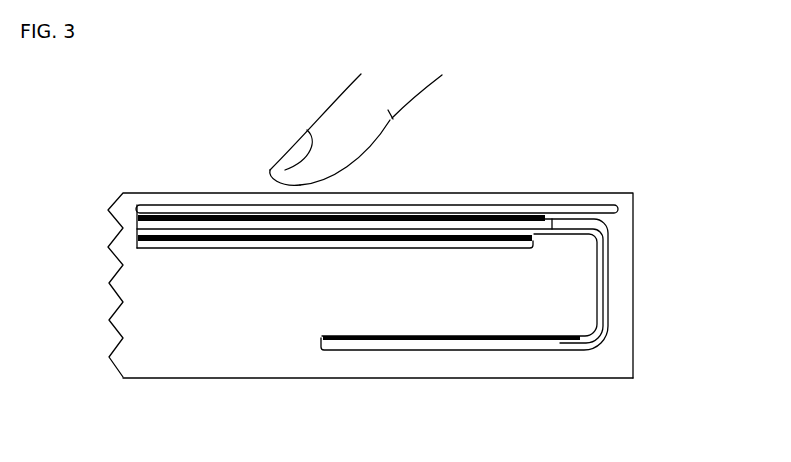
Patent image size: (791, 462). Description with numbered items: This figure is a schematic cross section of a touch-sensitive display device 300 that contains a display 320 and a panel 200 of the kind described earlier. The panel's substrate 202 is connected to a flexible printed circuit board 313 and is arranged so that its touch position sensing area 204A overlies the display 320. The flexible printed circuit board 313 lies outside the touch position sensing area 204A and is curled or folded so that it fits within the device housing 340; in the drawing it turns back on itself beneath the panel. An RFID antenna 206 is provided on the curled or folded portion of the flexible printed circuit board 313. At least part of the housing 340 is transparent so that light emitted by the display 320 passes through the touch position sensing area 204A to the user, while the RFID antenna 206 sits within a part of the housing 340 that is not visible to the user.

The touch-sensitive display device 300 is at (574, 194).
The panel 200 is at (616, 255).
The touch position sensing area 204A is at (207, 216).
The substrate 202 is at (333, 228).
The RFID antenna 206 is at (427, 333).
The flexible printed circuit board 313 is at (609, 351).
The display 320 is at (187, 280).
The device housing 340 is at (173, 380).